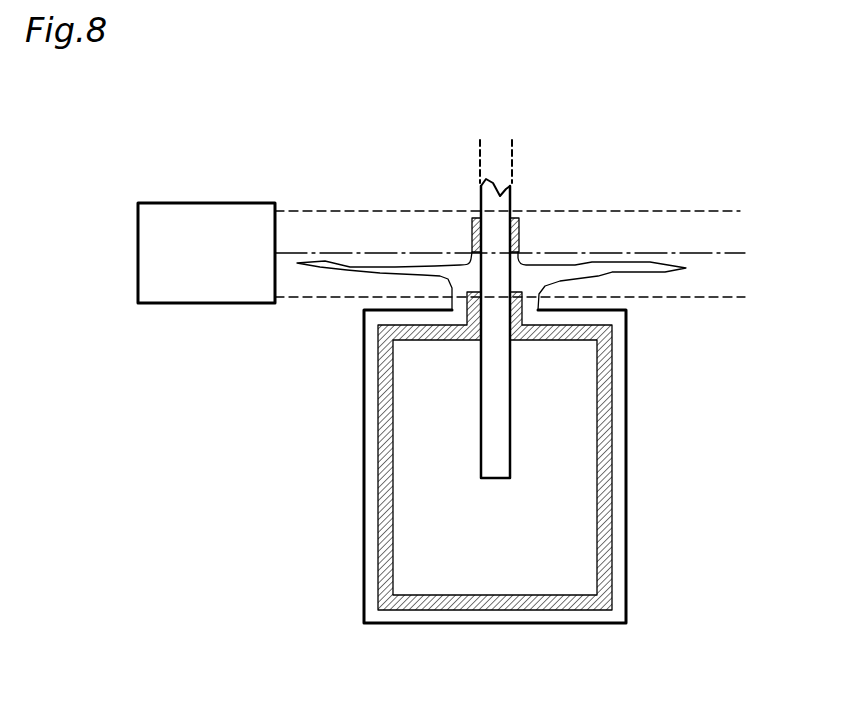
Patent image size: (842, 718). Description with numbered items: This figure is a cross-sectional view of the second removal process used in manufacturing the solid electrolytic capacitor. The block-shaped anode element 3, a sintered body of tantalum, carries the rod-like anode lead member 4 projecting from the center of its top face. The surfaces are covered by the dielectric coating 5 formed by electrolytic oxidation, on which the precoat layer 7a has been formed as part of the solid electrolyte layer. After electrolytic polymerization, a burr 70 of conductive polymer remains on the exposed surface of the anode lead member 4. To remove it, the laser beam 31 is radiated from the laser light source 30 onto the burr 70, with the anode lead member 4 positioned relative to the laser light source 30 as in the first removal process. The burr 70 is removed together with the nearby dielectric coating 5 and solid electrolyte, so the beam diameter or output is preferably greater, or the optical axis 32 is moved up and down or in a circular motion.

The anode element 3 is at (427, 485).
The anode lead member 4 is at (498, 213).
The dielectric coating 5 is at (522, 232).
The precoat layer 7a is at (608, 538).
The laser light source 30 is at (192, 277).
The laser beam 31 is at (697, 238).
The optical axis 32 is at (692, 255).
The burr 70 is at (634, 267).